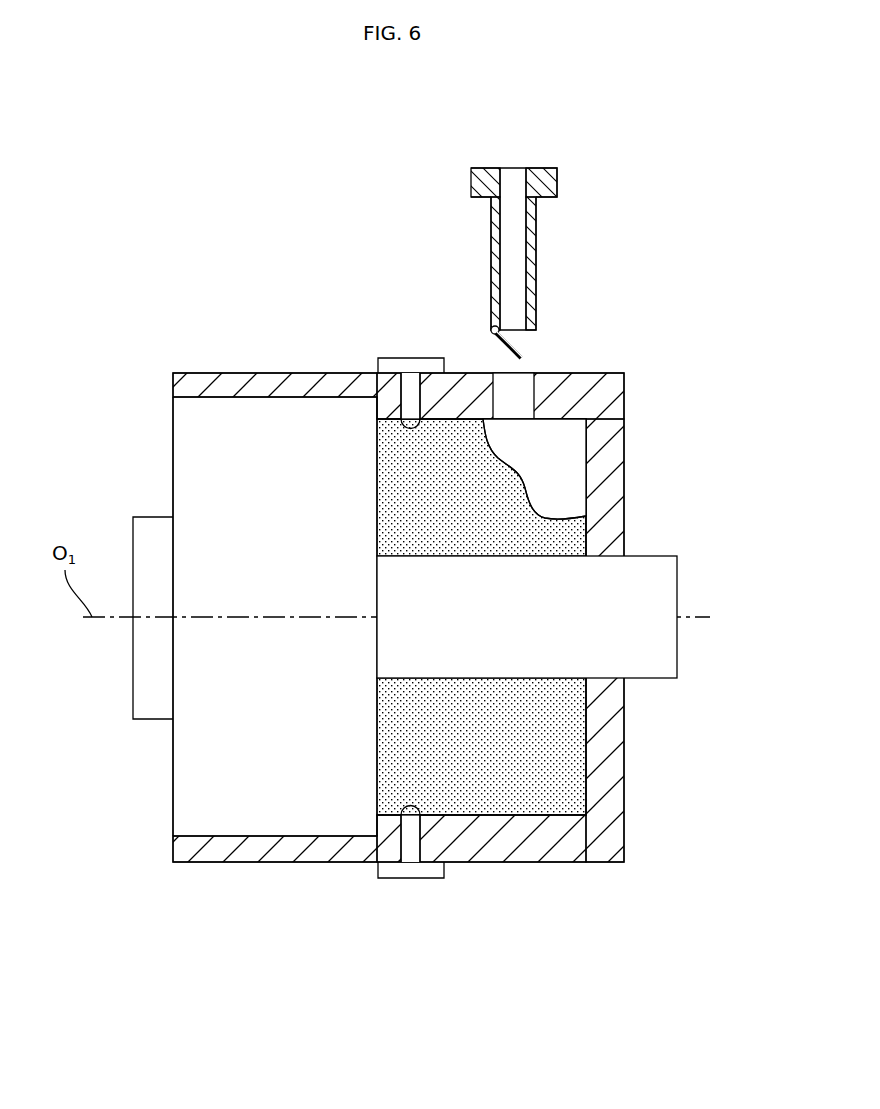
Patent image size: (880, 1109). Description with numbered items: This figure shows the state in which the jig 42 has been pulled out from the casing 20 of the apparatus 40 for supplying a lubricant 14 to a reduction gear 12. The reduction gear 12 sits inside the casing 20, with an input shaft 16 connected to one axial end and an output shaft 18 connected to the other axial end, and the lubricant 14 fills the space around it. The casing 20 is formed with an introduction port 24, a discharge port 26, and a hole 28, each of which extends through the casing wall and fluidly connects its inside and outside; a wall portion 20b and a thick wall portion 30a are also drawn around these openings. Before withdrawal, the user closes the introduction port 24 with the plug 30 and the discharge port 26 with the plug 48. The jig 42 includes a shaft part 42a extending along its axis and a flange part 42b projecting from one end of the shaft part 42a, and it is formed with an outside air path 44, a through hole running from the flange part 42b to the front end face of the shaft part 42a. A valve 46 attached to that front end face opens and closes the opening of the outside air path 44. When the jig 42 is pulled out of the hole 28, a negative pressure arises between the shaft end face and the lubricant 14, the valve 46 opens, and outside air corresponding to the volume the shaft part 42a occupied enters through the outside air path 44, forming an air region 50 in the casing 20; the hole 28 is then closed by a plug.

The reduction gear 12 is at (223, 415).
The lubricant 14 is at (490, 758).
The input shaft 16 is at (663, 575).
The output shaft 18 is at (145, 522).
The casing 20 is at (637, 398).
The housing thin plate portion 20b is at (268, 370).
The introduction port 24 is at (418, 840).
The discharge port 26 is at (402, 390).
The hole 28 is at (532, 410).
The plug 30 is at (393, 873).
The thick plate portion 30a is at (467, 385).
The apparatus 40 is at (651, 135).
The jig 42 is at (648, 165).
The shaft part 42a is at (532, 244).
The flange part 42b is at (556, 186).
The outside air path 44 is at (500, 262).
The valve 46 is at (525, 352).
The plug 48 is at (397, 365).
The air region 50 is at (560, 470).